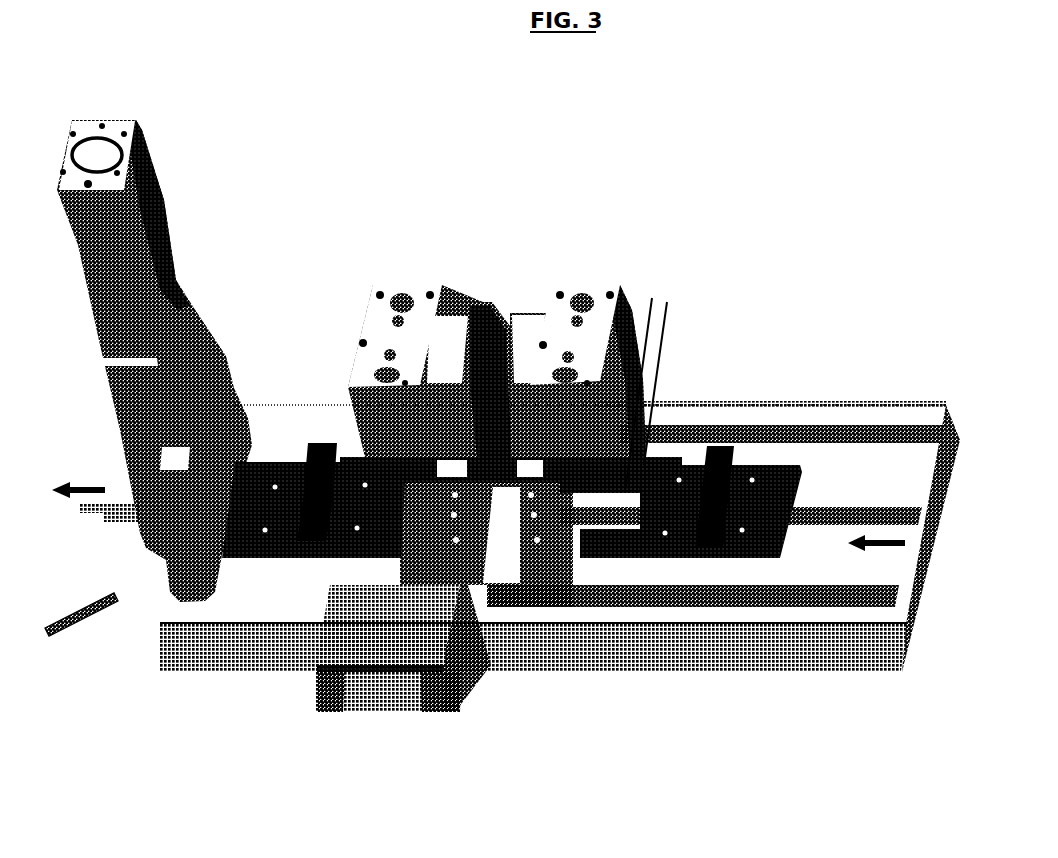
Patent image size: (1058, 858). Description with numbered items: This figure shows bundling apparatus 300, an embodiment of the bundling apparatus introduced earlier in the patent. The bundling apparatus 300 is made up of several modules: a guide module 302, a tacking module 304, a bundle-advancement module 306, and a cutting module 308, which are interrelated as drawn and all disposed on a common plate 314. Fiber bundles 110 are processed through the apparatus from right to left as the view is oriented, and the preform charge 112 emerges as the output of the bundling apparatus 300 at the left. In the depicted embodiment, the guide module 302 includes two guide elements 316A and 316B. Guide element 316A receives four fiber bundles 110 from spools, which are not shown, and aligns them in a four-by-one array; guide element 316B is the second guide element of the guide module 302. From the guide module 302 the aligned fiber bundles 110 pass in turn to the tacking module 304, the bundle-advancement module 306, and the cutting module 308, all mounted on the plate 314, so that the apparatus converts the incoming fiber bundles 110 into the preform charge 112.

The bundling apparatus 300 is at (230, 54).
The guide module 302 is at (740, 578).
The tacking module 304 is at (667, 367).
The bundle-advancement module 306 is at (426, 271).
The cutting module 308 is at (168, 558).
The fiber bundles 110 is at (842, 495).
The preform charge 112 is at (65, 601).
The plate 314 is at (856, 570).
The guide element 316A is at (779, 445).
The guide element 316B is at (286, 441).